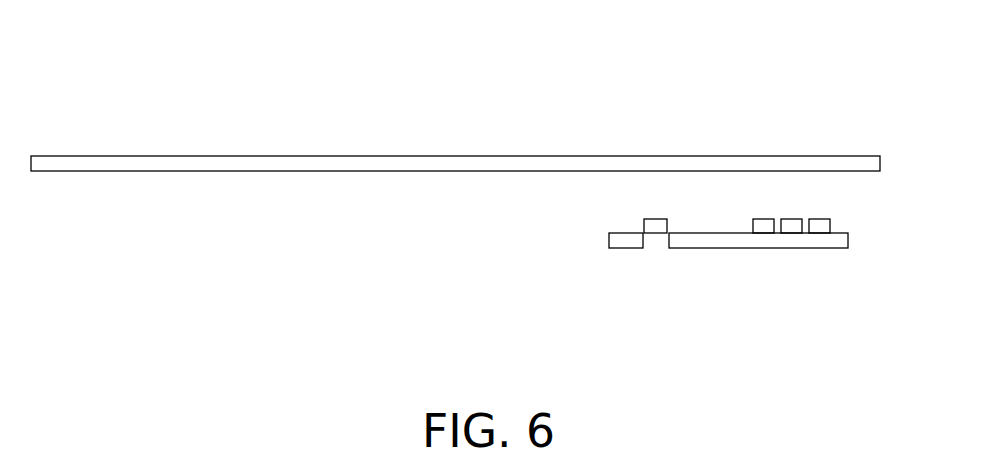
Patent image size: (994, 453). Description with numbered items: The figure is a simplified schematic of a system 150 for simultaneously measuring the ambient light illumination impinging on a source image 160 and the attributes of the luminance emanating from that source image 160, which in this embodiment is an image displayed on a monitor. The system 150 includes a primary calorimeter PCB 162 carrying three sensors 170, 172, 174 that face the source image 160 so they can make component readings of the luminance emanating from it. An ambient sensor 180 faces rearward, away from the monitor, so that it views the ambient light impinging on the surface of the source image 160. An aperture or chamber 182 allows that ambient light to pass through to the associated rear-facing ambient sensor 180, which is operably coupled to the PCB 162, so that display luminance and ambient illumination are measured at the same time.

The system 150 is at (498, 203).
The source image 160 is at (213, 155).
The primary calorimeter PCB 162 is at (837, 248).
The sensor 170 is at (765, 219).
The sensor 172 is at (791, 219).
The sensor 174 is at (823, 219).
The ambient sensor 180 is at (655, 219).
The aperture or chamber 182 is at (655, 246).